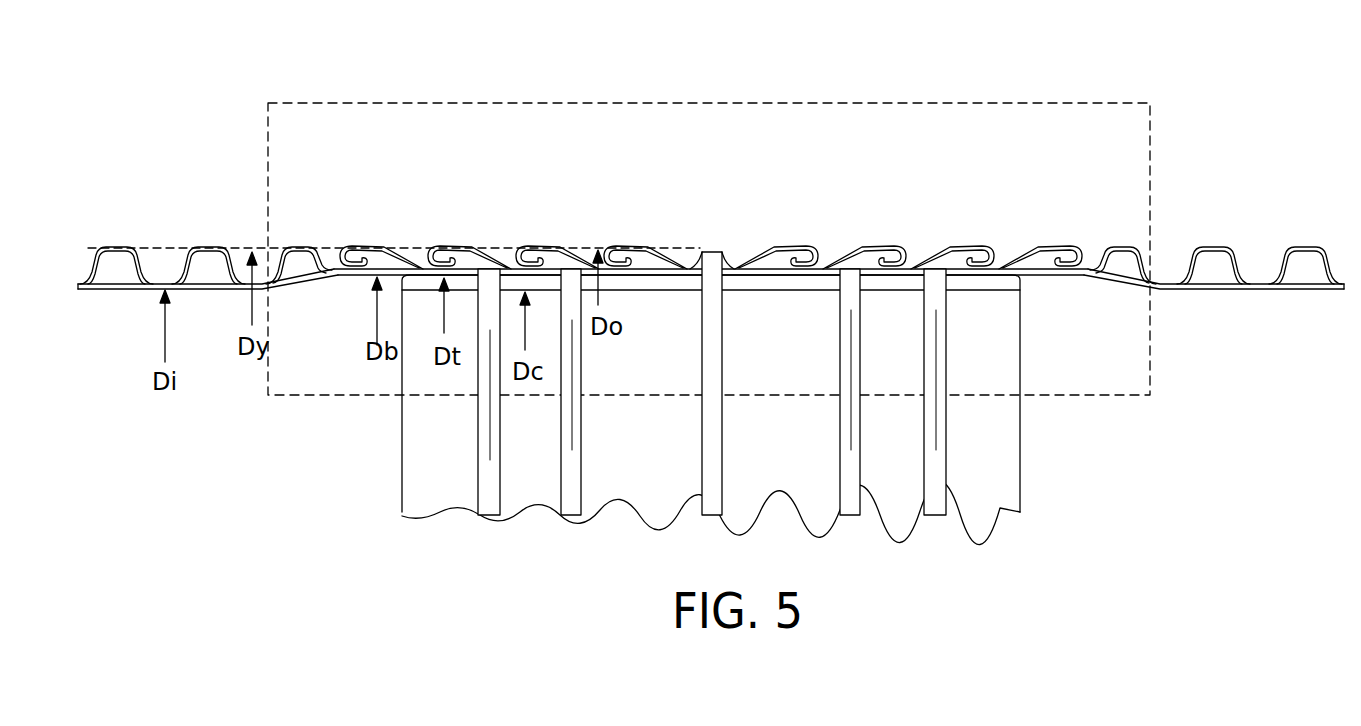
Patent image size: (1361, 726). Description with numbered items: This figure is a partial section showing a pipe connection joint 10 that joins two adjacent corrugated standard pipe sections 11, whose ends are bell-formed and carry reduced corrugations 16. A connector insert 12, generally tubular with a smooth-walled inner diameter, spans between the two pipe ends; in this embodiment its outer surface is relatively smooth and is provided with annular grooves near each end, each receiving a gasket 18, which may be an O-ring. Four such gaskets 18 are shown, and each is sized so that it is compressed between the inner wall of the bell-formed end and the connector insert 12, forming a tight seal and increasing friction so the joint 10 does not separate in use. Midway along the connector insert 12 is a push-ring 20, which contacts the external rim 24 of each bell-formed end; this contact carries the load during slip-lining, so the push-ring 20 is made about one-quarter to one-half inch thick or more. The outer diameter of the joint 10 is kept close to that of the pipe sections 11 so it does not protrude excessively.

The pipe connection joint 10 is at (794, 103).
The standard pipe sections 11 is at (138, 240).
The connector insert 12 is at (1020, 322).
The reduced corrugations 16 is at (627, 249).
The gasket 18 is at (497, 247).
The push-ring 20 is at (711, 250).
The external rim 24 is at (700, 255).